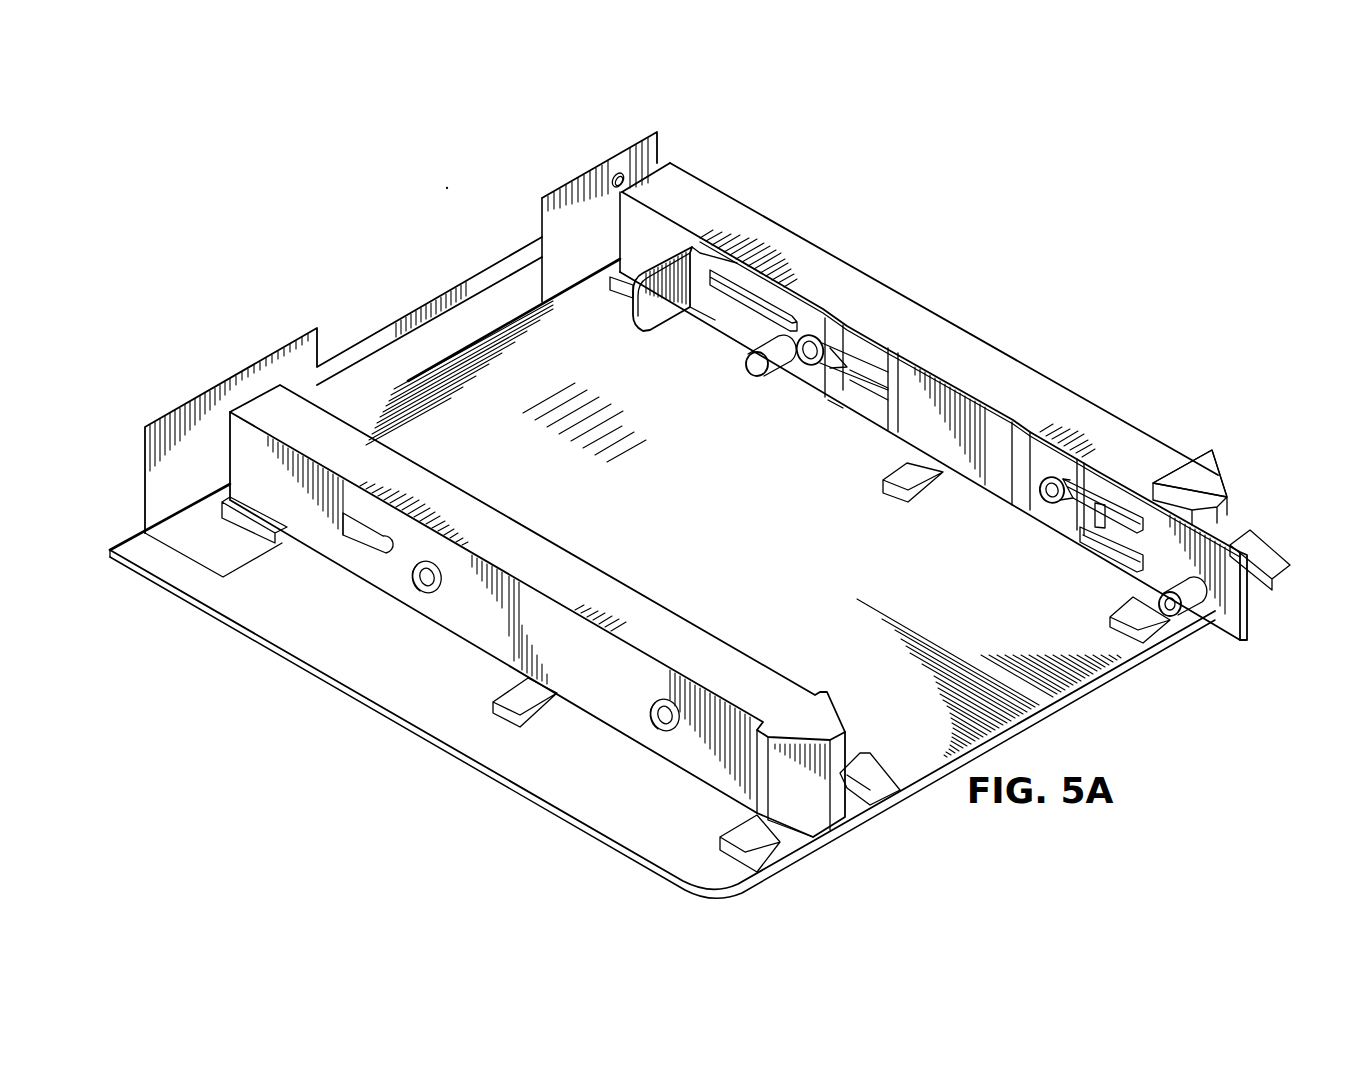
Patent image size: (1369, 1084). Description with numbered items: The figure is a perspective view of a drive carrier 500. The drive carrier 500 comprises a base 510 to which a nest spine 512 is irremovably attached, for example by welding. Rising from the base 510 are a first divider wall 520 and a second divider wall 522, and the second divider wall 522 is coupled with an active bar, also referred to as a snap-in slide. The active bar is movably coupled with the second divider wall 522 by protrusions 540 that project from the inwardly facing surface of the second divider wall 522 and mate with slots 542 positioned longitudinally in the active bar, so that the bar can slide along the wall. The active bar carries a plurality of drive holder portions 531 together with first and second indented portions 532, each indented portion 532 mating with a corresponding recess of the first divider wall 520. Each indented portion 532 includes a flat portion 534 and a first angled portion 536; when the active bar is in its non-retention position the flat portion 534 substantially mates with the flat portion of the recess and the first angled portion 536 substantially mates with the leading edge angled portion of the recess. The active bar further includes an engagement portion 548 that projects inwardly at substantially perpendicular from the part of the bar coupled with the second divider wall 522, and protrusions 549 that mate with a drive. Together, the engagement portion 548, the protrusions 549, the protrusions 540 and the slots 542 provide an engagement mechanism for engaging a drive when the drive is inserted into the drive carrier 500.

The drive carrier 500 is at (447, 188).
The base 510 is at (322, 668).
The nest spine 512 is at (292, 350).
The first divider wall 520 is at (548, 550).
The second divider wall 522 is at (929, 318).
The drive holder portions 531 is at (768, 272).
The indented portions 532 is at (886, 308).
The flat portion 534 is at (870, 410).
The first angled portion 536 is at (838, 395).
The protrusions 540 is at (895, 345).
The slots 542 is at (838, 308).
The engagement portion 548 is at (666, 252).
The protrusions 549 is at (716, 320).